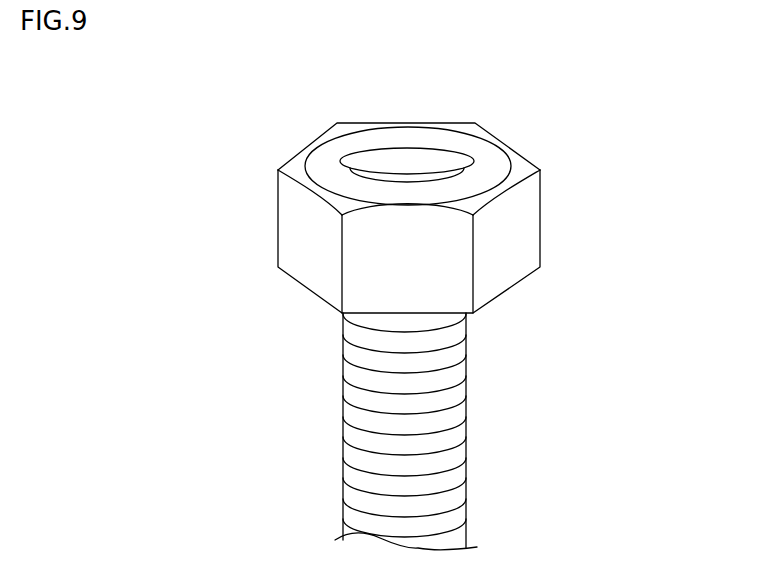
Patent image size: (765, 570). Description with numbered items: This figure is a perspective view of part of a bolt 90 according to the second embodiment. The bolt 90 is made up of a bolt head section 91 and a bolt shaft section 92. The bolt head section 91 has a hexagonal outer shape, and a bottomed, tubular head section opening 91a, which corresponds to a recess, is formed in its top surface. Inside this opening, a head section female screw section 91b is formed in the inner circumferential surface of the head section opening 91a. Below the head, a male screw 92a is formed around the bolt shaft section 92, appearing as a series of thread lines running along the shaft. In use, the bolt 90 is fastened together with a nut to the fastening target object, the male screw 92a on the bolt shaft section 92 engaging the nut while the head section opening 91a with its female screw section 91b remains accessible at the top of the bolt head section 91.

The bolt 90 is at (556, 148).
The bolt head section 91 is at (510, 275).
The head section opening 91a is at (462, 156).
The head section female screw section 91b is at (418, 160).
The bolt shaft section 92 is at (460, 450).
The male screw 92a is at (460, 403).